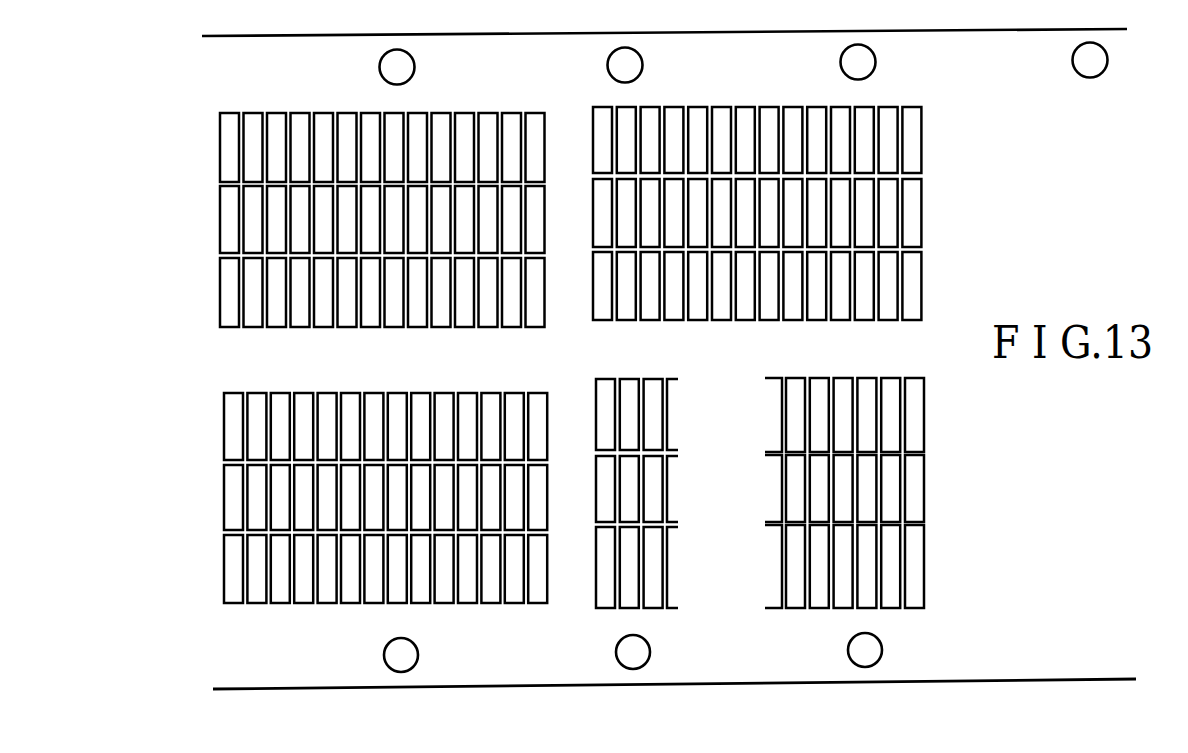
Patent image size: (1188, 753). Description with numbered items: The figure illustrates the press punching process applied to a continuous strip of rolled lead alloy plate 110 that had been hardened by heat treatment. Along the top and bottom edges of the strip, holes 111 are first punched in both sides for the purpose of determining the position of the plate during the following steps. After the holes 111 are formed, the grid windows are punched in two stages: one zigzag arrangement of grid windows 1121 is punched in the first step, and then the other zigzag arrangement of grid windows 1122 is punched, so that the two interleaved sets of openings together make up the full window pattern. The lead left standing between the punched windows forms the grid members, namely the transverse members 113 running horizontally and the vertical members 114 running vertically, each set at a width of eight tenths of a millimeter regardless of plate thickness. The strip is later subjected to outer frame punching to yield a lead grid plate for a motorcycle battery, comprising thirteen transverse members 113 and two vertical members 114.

The rolled lead alloy plate 110 is at (481, 672).
The holes 111 is at (868, 660).
The zigzag arrangement of grid windows 1121 is at (838, 148).
The zigzag arrangement of grid windows 1122 is at (860, 165).
The transverse members 113 is at (908, 513).
The vertical members 114 is at (892, 518).